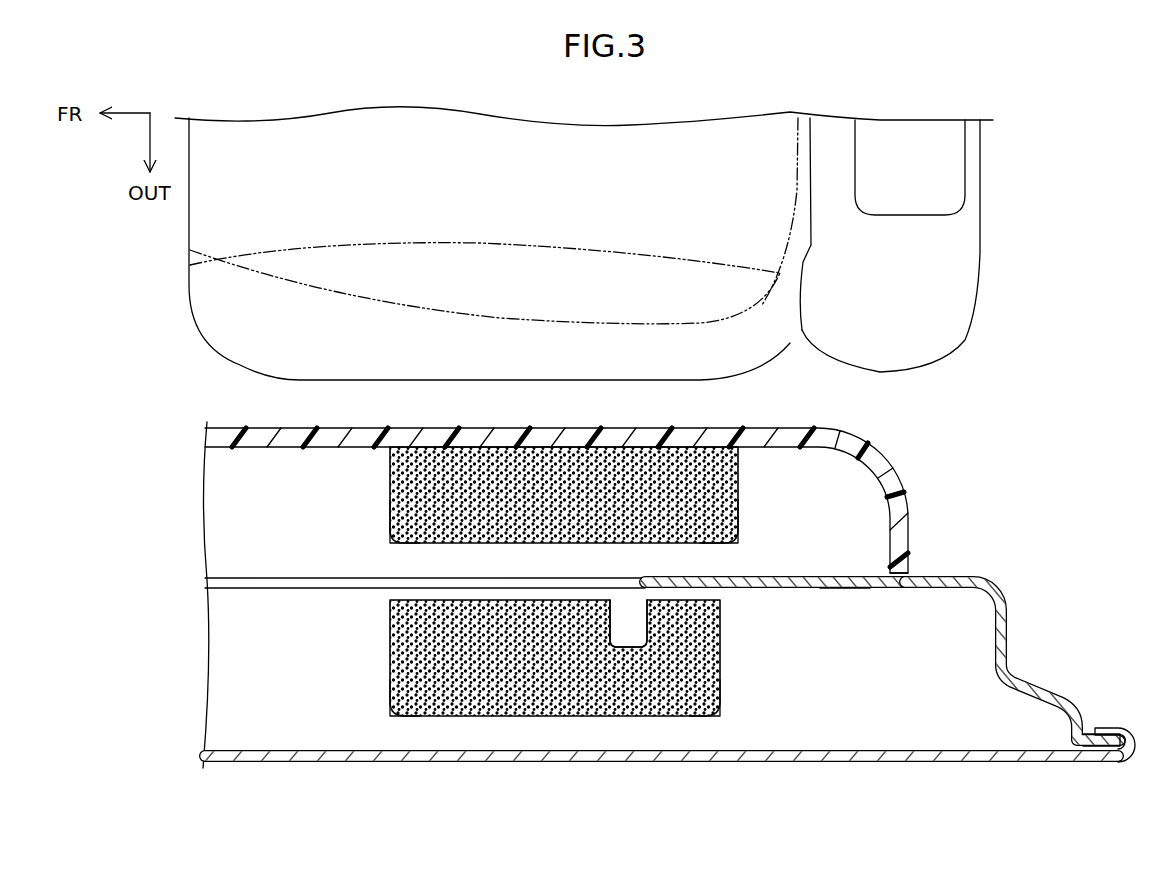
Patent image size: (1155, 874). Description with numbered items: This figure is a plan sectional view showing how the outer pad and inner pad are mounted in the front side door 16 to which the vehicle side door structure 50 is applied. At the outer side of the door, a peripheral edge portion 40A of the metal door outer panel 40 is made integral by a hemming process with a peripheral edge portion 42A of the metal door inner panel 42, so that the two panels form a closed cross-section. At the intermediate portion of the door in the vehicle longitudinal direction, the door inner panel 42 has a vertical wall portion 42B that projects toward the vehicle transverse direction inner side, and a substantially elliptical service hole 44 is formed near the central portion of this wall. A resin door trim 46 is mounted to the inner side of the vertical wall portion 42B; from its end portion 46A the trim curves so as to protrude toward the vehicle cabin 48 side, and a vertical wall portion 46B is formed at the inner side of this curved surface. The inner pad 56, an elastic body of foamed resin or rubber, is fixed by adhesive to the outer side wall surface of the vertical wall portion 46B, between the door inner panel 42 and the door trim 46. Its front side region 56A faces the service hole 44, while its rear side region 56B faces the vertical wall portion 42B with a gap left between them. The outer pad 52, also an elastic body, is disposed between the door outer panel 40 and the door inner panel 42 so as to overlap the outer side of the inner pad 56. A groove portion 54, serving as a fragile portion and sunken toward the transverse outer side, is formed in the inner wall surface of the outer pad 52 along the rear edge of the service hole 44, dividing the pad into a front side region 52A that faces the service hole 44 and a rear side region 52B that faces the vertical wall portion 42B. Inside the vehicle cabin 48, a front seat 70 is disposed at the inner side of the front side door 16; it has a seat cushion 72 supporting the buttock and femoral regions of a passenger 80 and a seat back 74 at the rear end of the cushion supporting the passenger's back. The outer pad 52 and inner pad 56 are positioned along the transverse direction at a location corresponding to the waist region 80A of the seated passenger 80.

The front side door 16 is at (672, 793).
The door outer panel 40 is at (672, 788).
The peripheral edge portion 40A is at (1112, 764).
The door inner panel 42 is at (1010, 586).
The peripheral edge portion 42A is at (1100, 733).
The vertical wall portion 42B is at (845, 589).
The service hole 44 is at (555, 563).
The door trim 46 is at (604, 481).
The end portion 46A is at (908, 566).
The vertical wall portion 46B is at (718, 435).
The vehicle cabin 48 is at (578, 266).
The vehicle side door structure 50 is at (671, 623).
The outer pad 52 is at (388, 640).
The front side region 52A is at (420, 683).
The rear side region 52B is at (695, 683).
The groove portion 54 is at (625, 645).
The inner pad 56 is at (388, 478).
The front side region 56A is at (420, 518).
The rear side region 56B is at (702, 495).
The front seat 70 is at (183, 268).
The seat cushion 72 is at (222, 330).
The seat back 74 is at (970, 237).
The passenger 80 is at (497, 320).
The waist region 80A is at (595, 323).